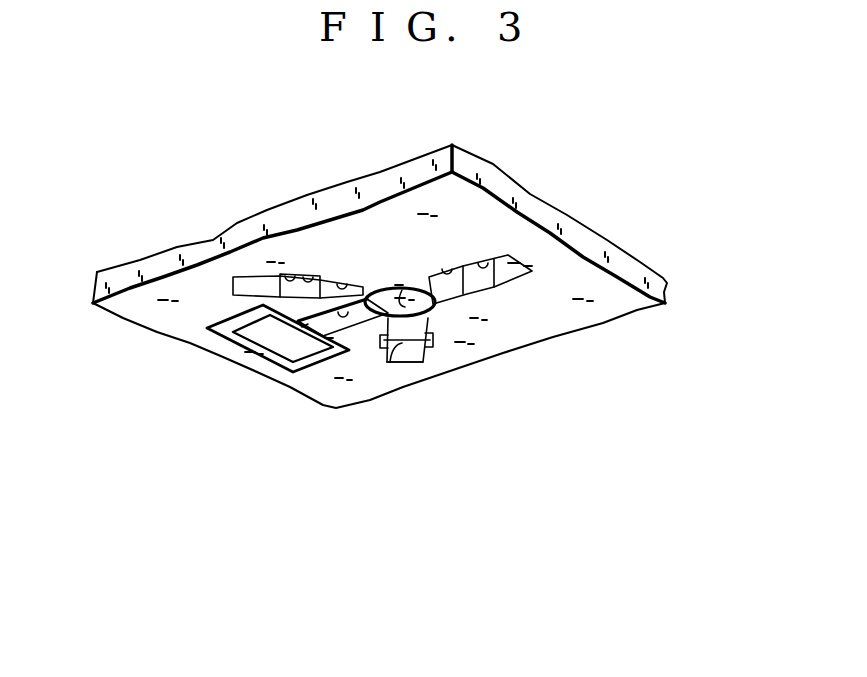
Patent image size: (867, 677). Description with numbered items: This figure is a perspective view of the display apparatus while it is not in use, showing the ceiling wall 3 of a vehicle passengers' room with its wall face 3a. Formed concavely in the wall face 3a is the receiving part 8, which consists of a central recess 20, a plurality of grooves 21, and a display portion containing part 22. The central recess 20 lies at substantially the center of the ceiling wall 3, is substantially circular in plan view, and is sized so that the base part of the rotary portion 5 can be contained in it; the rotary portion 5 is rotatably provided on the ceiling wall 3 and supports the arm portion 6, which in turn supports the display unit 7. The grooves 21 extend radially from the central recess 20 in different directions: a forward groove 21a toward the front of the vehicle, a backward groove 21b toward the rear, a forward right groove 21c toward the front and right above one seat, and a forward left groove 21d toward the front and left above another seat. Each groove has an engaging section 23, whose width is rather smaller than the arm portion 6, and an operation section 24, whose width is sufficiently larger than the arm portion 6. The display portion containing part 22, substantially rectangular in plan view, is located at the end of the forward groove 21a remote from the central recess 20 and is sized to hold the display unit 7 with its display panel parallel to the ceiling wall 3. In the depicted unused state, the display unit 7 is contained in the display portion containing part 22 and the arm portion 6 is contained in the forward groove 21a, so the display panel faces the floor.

The ceiling wall 3 is at (530, 218).
The wall face 3a is at (537, 253).
The rotary portion 5 is at (402, 290).
The arm portion 6 is at (382, 290).
The display unit 7 is at (282, 353).
The receiving part 8 is at (688, 602).
The central recess 20 is at (437, 305).
The grooves 21 is at (525, 653).
The forward groove 21a is at (372, 318).
The backward groove 21b is at (510, 272).
The forward right groove 21c is at (435, 346).
The forward left groove 21d is at (291, 278).
The display portion containing part 22 is at (320, 363).
The engaging section 23 is at (342, 285).
The operation section 24 is at (300, 276).